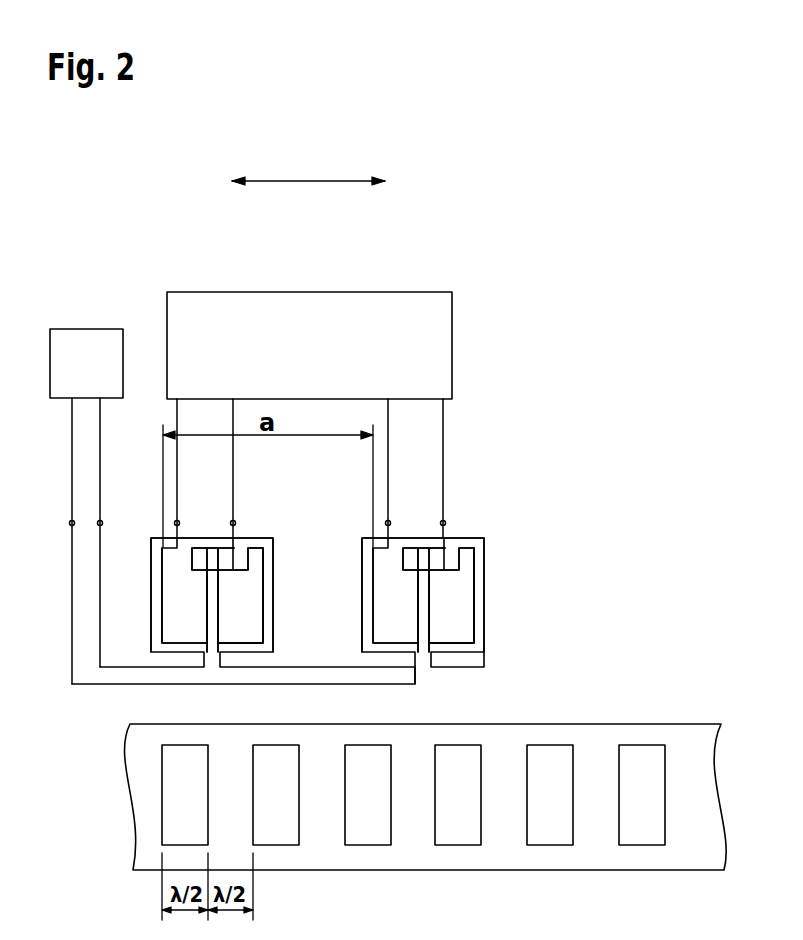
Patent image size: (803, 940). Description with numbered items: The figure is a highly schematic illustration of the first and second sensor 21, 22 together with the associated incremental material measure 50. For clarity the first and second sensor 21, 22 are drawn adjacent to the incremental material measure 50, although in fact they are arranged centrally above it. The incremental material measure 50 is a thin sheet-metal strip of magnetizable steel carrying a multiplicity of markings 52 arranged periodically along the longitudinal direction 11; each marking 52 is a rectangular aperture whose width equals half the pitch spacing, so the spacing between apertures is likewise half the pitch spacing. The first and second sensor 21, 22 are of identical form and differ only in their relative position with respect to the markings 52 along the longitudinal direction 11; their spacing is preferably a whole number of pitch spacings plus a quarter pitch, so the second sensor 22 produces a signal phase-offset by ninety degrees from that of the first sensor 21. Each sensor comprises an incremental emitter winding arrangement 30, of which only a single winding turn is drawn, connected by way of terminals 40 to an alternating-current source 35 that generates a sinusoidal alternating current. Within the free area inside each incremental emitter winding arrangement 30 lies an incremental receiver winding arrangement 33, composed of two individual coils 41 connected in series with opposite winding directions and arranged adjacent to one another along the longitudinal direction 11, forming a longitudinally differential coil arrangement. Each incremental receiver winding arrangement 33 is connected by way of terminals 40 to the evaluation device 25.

The longitudinal direction 11 is at (314, 181).
The first sensor 21 is at (285, 520).
The second sensor 22 is at (510, 520).
The evaluation device 25 is at (361, 302).
The incremental emitter winding arrangement 30 is at (274, 580).
The incremental receiver winding arrangement 33 is at (263, 618).
The alternating-current source 35 is at (84, 341).
The terminals 40 is at (100, 521).
The individual coils 41 is at (166, 626).
The incremental material measure 50 is at (496, 857).
The markings 52 is at (552, 749).